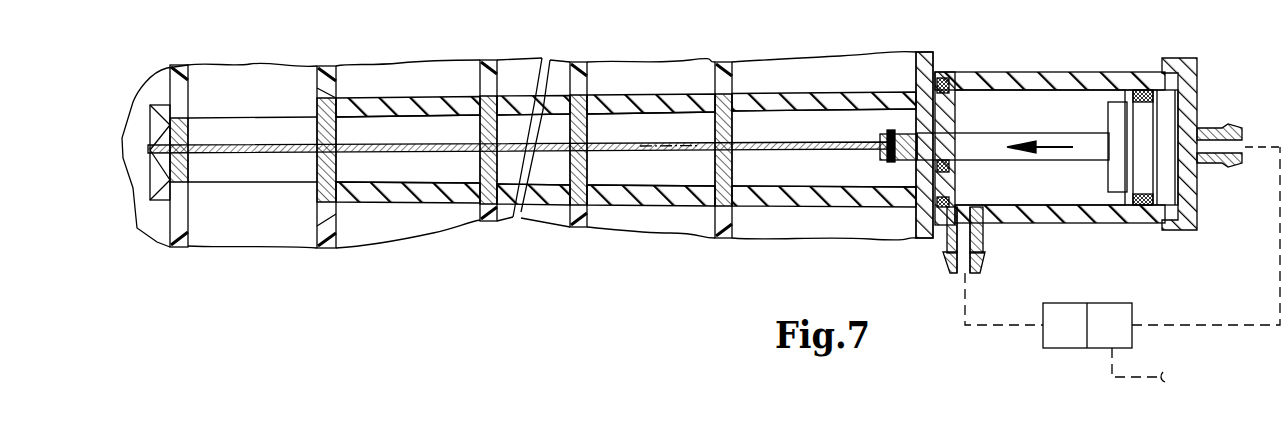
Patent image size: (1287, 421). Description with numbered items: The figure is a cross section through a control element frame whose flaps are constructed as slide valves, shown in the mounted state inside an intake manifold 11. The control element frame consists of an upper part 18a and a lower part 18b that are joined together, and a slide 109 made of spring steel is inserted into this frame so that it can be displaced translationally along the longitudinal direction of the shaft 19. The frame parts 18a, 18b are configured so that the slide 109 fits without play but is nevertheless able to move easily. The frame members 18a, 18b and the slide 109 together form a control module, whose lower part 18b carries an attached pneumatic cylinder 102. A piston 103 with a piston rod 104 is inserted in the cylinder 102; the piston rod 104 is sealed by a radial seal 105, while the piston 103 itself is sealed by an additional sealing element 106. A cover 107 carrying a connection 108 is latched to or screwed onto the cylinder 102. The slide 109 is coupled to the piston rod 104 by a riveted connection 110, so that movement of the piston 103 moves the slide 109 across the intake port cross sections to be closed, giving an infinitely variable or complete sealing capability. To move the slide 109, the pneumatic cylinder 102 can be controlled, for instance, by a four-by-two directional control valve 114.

The outer tube 11 is at (331, 237).
The upper part of the control element frame 18a is at (586, 128).
The lower part of the control element frame 18b is at (717, 172).
The shaft 19 is at (676, 148).
The slide 109 is at (395, 156).
The riveted connection 110 is at (887, 130).
The pneumatic cylinder 102 is at (1070, 218).
The piston 103 is at (1142, 118).
The piston rod 104 is at (1050, 153).
The radial seal 105 is at (955, 122).
The sealing element 106 is at (1143, 90).
The cover 107 is at (1175, 230).
The connection 108 is at (1225, 163).
The 4/2 directional control valve 114 is at (1077, 310).